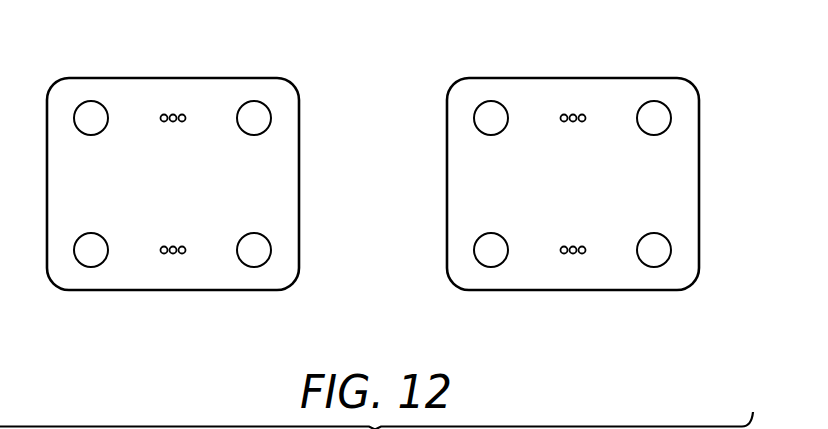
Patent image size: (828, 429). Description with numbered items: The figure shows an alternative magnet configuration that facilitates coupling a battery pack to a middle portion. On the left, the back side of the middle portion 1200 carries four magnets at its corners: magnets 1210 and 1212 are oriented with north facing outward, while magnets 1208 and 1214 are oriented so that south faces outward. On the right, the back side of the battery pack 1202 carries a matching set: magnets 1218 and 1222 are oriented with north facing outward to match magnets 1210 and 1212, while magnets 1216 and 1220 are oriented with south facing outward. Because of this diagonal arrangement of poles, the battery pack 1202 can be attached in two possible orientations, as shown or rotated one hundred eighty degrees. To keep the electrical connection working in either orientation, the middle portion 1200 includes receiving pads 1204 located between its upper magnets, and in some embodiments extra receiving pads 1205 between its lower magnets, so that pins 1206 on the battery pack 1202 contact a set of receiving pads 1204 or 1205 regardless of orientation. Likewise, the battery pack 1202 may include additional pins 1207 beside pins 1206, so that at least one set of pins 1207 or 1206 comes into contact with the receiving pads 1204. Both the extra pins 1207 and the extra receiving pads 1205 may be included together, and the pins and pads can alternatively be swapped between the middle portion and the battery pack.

The middle portion 1200 is at (268, 161).
The battery pack 1202 is at (474, 210).
The receiving pads 1204 is at (178, 112).
The extra receiving pads 1205 is at (178, 257).
The pins 1206 is at (566, 112).
The additional pins 1207 is at (567, 257).
The magnet 1208 is at (91, 267).
The magnet 1210 is at (91, 101).
The magnet 1212 is at (254, 267).
The magnet 1214 is at (254, 101).
The magnet 1216 is at (491, 267).
The magnet 1218 is at (491, 101).
The magnet 1220 is at (654, 101).
The magnet 1222 is at (654, 267).